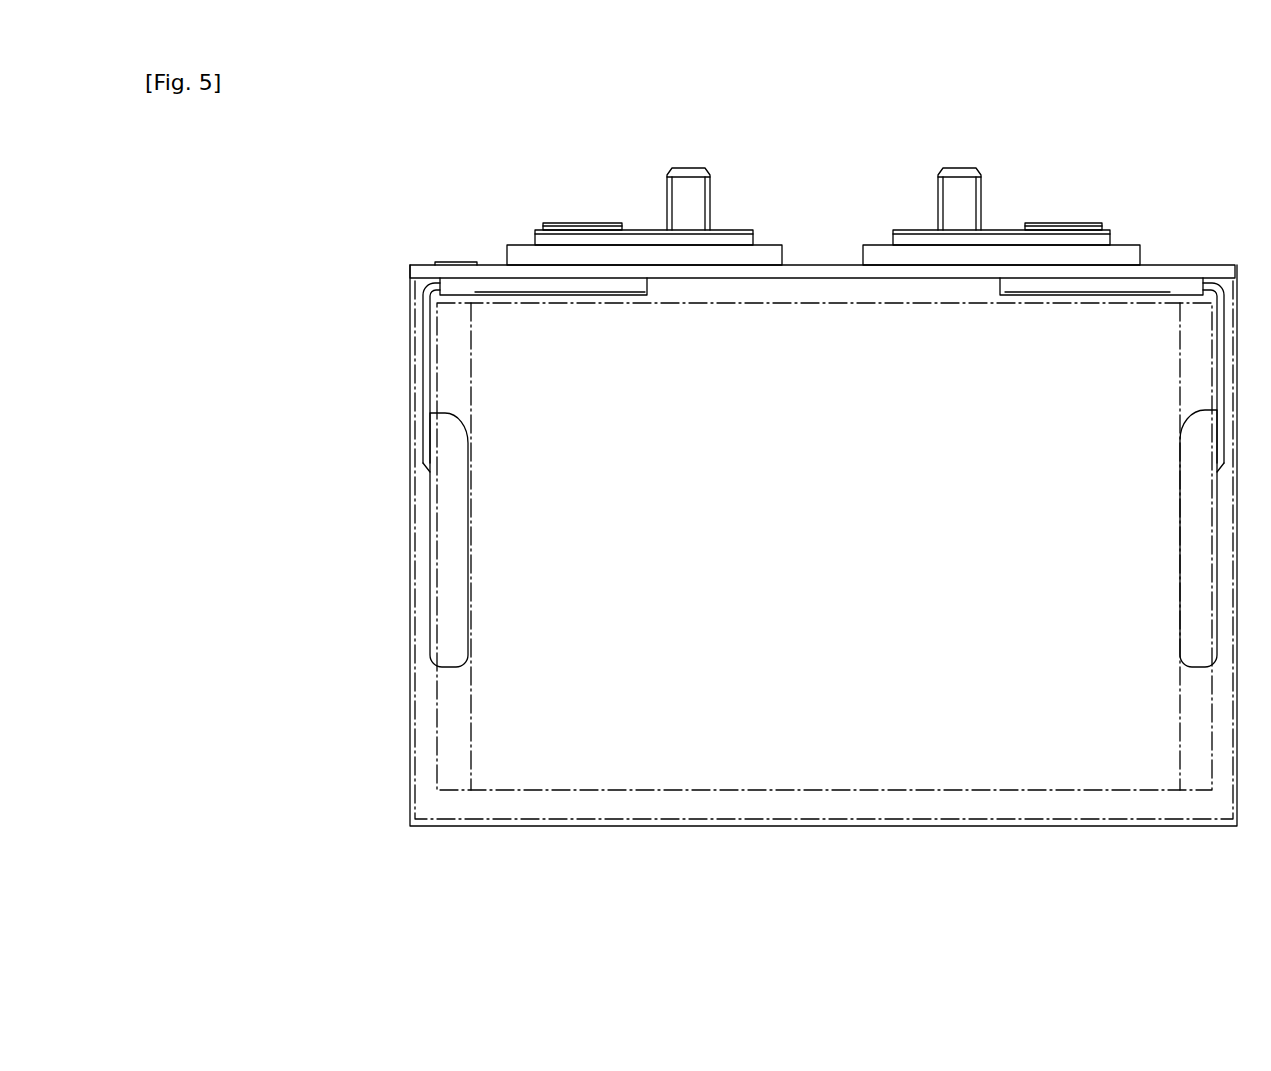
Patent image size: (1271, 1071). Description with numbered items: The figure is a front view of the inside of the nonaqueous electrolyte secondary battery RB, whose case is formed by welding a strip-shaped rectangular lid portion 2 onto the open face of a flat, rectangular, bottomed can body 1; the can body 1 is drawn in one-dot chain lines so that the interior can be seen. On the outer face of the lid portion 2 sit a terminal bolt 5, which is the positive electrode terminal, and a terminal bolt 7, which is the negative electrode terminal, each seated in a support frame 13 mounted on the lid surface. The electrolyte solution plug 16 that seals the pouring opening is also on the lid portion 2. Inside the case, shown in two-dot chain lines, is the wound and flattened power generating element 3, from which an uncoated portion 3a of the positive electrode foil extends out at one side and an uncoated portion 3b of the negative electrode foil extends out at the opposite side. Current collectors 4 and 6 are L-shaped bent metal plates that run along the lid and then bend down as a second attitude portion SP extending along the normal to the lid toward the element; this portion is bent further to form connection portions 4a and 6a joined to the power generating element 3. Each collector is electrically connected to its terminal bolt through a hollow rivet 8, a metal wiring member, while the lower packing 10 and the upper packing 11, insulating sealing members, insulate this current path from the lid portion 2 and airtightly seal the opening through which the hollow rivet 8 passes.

The can body 1 is at (410, 566).
The lid portion 2 is at (1173, 265).
The power generating element 3 is at (737, 790).
The portion of the foil-shaped positive electrode plate not applied with the active 3a is at (437, 731).
The portion of the foil-shaped negative electrode plate not applied with the active 3b is at (1187, 735).
The current collector 4 is at (500, 465).
The connection portion 4a is at (455, 518).
The terminal bolt 5 is at (688, 168).
The current collector 6 is at (1158, 528).
The connection portion 6a is at (1188, 458).
The terminal bolt 7 is at (954, 168).
The hollow rivet 8 is at (592, 223).
The lower packing 10 is at (633, 296).
The upper packing 11 is at (893, 236).
The support frame 13 is at (522, 245).
The electrolyte solution plug 16 is at (460, 262).
The nonaqueous electrolyte secondary battery RB is at (767, 178).
The second attitude portion SP is at (431, 372).